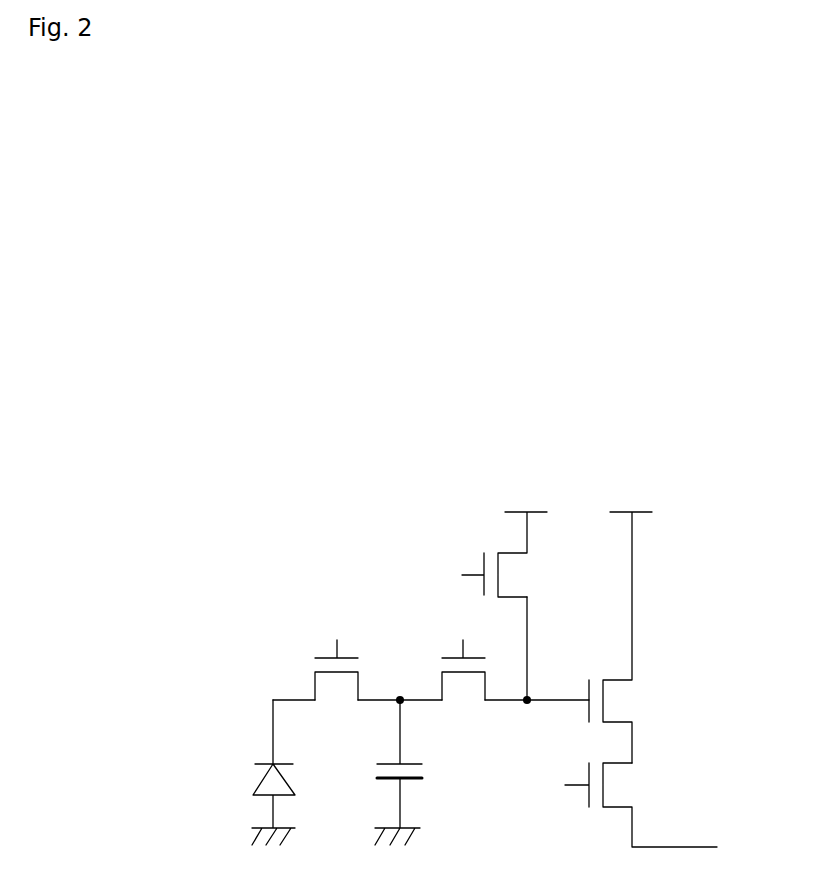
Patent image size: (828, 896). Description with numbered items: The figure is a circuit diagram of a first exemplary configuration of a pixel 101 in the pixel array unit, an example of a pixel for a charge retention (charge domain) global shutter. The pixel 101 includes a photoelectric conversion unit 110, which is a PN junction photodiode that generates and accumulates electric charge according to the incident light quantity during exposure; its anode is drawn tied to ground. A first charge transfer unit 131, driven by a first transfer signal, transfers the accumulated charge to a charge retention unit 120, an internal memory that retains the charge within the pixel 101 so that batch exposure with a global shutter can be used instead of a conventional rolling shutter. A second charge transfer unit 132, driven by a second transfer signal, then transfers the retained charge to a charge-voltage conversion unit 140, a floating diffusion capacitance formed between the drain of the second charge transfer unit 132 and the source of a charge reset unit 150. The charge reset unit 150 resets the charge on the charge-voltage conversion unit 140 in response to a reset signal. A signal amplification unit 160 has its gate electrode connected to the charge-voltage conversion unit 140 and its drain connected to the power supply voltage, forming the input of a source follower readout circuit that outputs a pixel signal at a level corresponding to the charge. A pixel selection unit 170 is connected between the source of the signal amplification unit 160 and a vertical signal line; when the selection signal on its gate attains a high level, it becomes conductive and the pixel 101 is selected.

The pixel 101 is at (465, 648).
The photoelectric conversion unit 110 is at (258, 772).
The charge retention unit 120 is at (426, 770).
The first charge transfer unit 131 is at (344, 680).
The second charge transfer unit 132 is at (470, 680).
The charge-voltage conversion unit 140 is at (550, 663).
The charge reset unit 150 is at (496, 554).
The signal amplification unit 160 is at (639, 633).
The pixel selection unit 170 is at (625, 796).